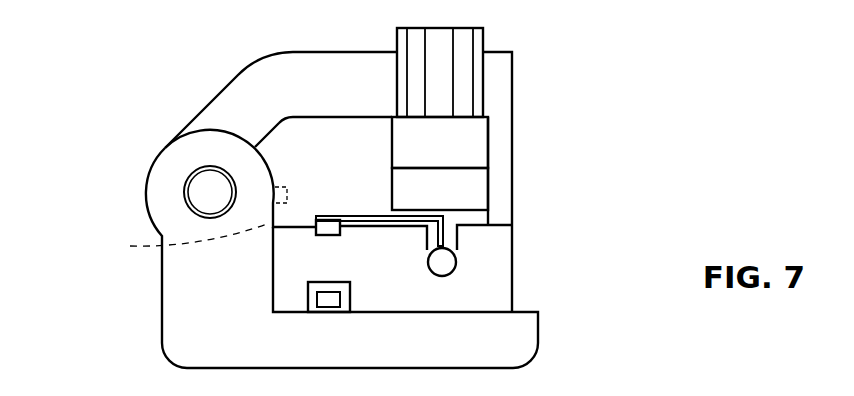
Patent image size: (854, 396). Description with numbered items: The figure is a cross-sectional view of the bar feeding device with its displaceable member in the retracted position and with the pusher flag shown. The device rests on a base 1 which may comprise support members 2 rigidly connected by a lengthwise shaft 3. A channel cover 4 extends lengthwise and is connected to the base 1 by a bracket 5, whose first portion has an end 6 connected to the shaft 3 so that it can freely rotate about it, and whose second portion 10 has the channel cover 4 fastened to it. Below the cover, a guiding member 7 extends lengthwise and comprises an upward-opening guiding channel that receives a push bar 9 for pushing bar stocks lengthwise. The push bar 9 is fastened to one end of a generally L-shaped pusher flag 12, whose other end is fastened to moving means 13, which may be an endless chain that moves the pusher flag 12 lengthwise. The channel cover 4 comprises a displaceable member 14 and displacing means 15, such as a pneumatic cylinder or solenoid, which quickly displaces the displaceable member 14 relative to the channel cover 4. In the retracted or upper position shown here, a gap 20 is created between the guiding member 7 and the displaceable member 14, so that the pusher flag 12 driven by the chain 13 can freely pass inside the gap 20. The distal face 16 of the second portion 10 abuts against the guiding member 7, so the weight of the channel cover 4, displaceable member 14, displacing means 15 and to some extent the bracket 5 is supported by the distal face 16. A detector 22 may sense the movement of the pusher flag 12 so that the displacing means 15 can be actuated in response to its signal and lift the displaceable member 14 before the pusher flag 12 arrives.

The base 1 is at (128, 319).
The support member 2 is at (200, 297).
The shaft 3 is at (210, 187).
The channel cover 4 is at (463, 147).
The bracket 5 is at (241, 60).
The end 6 is at (225, 117).
The guiding member 7 is at (498, 295).
The push bar 9 is at (455, 257).
The second portion 10 is at (500, 75).
The pusher flag 12 is at (367, 217).
The moving means 13 is at (332, 236).
The displaceable member 14 is at (477, 188).
The displacing means 15 is at (463, 43).
The distal face 16 is at (502, 228).
The gap 20 is at (388, 216).
The detector 22 is at (132, 245).